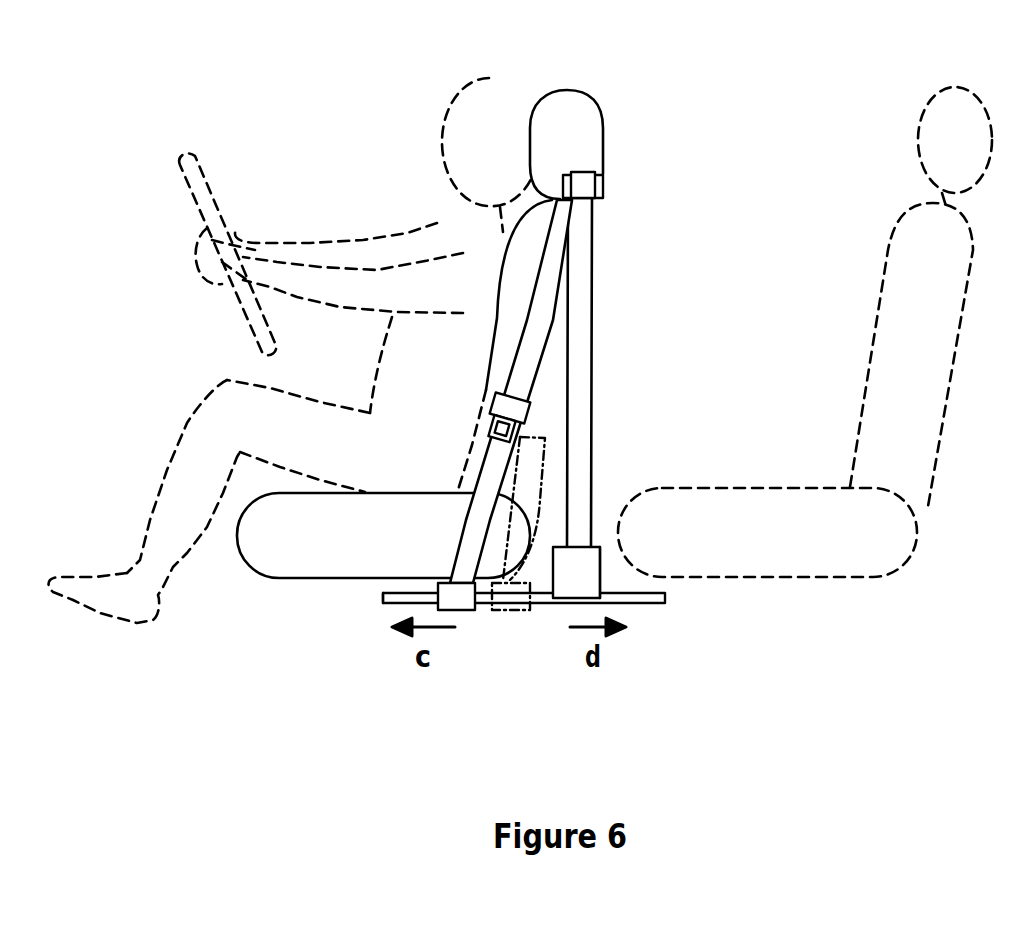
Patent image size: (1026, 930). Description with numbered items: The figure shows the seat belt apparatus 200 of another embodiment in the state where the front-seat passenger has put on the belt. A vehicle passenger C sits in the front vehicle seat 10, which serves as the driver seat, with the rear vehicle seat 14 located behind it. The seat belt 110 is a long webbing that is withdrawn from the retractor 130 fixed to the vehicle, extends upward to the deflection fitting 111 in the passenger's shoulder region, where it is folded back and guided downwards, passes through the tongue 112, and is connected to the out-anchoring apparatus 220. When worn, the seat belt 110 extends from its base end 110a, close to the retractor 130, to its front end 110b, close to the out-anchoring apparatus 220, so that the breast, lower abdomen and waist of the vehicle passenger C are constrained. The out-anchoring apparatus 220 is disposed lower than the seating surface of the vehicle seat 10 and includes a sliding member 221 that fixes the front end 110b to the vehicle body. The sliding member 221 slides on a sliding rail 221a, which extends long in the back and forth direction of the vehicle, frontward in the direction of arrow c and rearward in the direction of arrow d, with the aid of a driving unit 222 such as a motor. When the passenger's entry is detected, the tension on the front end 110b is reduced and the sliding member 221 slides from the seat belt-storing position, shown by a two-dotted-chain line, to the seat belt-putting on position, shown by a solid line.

The front vehicle seat 10 is at (567, 91).
The seat belt apparatus 200 is at (628, 122).
The rear vehicle seat 14 is at (896, 241).
The deflection fitting 111 is at (604, 183).
The seat belt 110 is at (596, 332).
The tongue 112 is at (514, 408).
The front end 110b is at (540, 553).
The base end 110a is at (575, 537).
The retractor 130 is at (601, 569).
The sliding rail 221a is at (390, 605).
The sliding member 221 is at (463, 612).
The driving unit 222 is at (509, 612).
The out-anchoring apparatus 220 is at (528, 627).
The vehicle passenger C is at (401, 149).